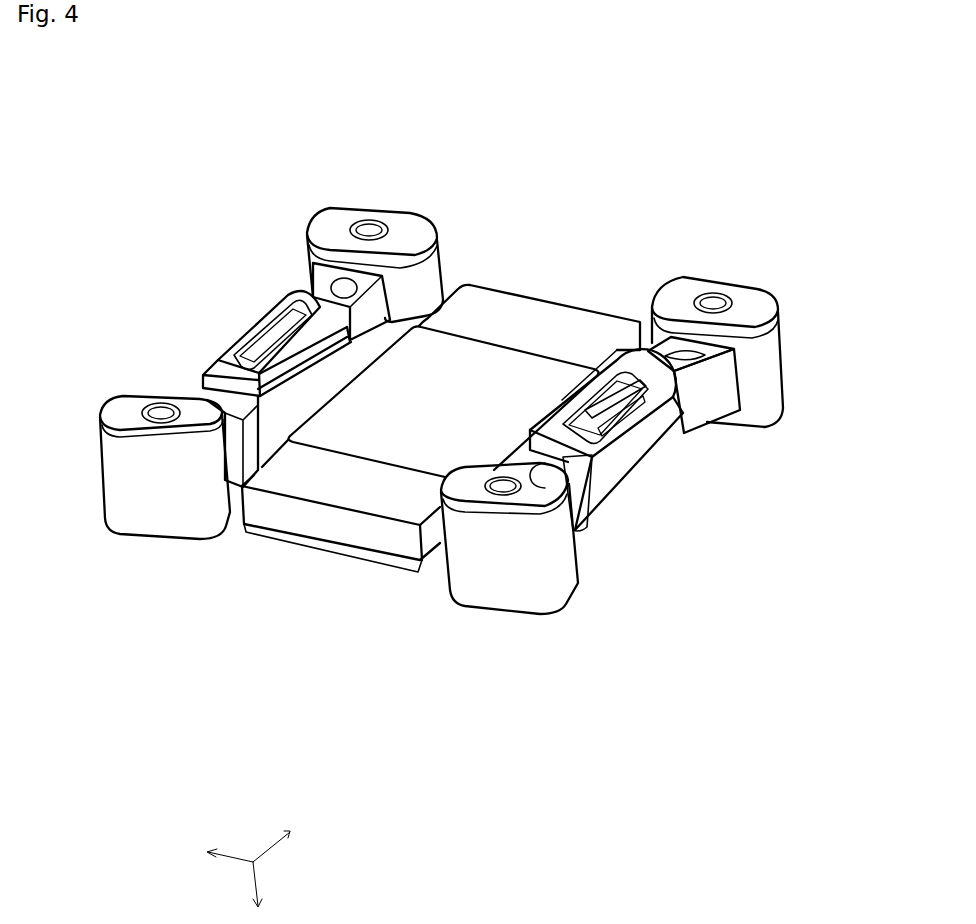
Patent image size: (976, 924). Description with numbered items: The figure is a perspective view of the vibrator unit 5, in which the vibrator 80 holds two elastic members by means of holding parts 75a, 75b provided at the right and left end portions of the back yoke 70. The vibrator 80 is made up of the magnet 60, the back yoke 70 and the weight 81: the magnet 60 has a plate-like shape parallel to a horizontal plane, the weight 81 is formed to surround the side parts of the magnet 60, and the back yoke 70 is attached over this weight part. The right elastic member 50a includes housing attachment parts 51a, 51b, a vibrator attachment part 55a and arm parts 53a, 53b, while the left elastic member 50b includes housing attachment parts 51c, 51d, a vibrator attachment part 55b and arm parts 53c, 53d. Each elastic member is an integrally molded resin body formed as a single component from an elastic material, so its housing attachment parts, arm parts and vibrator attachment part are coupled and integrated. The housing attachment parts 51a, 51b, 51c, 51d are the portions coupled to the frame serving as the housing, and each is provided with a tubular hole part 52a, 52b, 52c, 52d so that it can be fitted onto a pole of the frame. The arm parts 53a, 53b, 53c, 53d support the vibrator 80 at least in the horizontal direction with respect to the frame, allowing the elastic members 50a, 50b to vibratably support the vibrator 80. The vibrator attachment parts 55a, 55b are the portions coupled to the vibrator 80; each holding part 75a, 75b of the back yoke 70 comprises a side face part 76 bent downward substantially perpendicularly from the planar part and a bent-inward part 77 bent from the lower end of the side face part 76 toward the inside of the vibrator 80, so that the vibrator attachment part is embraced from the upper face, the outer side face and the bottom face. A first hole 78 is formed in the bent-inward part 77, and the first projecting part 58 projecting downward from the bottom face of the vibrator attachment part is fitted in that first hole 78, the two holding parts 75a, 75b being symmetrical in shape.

The vibrator unit 5 is at (105, 108).
The right elastic member 50a is at (219, 553).
The left elastic member 50b is at (578, 604).
The housing attachment part 51a is at (407, 233).
The housing attachment part 51b is at (124, 412).
The housing attachment part 51c is at (530, 492).
The housing attachment part 51d is at (693, 287).
The hole part 52a is at (356, 222).
The hole part 52b is at (158, 410).
The hole part 52c is at (478, 485).
The hole part 52d is at (718, 298).
The arm part 53a is at (368, 285).
The arm part 53b is at (262, 388).
The arm part 53c is at (525, 455).
The arm part 53d is at (665, 340).
The vibrator attachment part 55a is at (237, 302).
The vibrator attachment part 55b is at (605, 349).
The first projecting part 58 is at (263, 343).
The magnet 60 is at (378, 437).
The back yoke 70 is at (293, 540).
The holding part 75a is at (238, 302).
The holding part 75b is at (758, 576).
The side face part 76 is at (643, 463).
The bent-inward part 77 is at (310, 303).
The first hole 78 is at (607, 433).
The vibrator 80 is at (377, 645).
The weight 81 is at (337, 520).